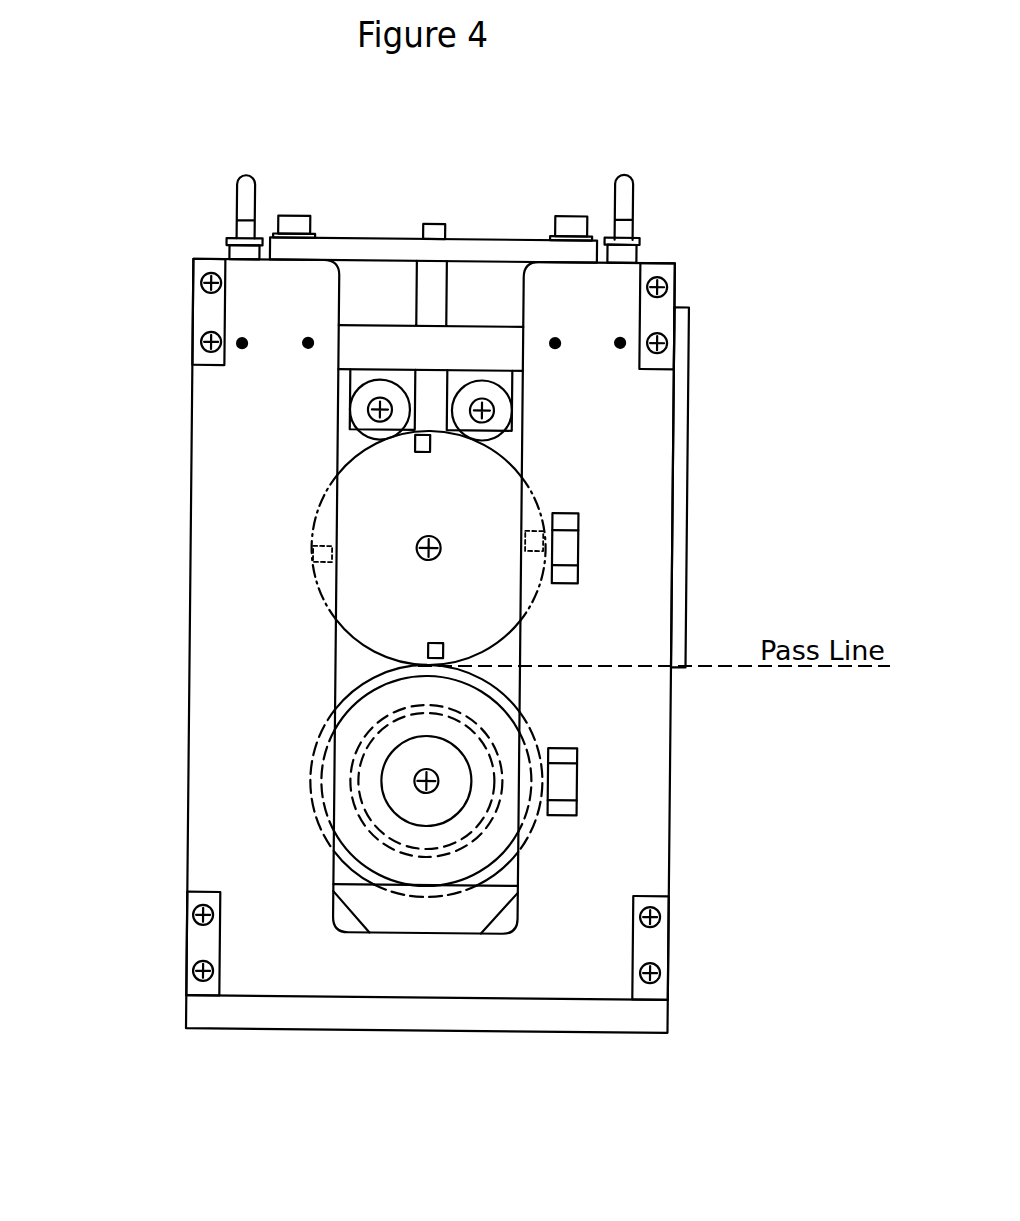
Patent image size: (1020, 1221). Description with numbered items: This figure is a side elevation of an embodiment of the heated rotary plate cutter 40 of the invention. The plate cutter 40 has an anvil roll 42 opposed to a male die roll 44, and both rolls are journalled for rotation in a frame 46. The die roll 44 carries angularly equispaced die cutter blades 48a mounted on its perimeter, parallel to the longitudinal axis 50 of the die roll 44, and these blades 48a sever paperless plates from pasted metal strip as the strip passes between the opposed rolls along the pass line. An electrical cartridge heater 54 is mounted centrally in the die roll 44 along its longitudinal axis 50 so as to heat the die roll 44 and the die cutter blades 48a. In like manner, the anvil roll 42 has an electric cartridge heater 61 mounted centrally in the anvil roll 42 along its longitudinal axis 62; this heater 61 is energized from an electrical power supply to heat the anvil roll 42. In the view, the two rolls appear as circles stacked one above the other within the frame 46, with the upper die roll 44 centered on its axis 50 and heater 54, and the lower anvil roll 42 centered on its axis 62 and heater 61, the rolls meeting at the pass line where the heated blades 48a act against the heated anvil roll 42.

The plate cutter 40 is at (716, 564).
The anvil roll 42 is at (532, 832).
The male die roll 44 is at (535, 490).
The frame 46 is at (663, 422).
The die cutter blades 48a is at (313, 552).
The longitudinal axis 50 is at (420, 537).
The electrical cartridge heater 54 is at (410, 540).
The electric cartridge heater 61 is at (417, 789).
The longitudinal axis 62 is at (413, 772).